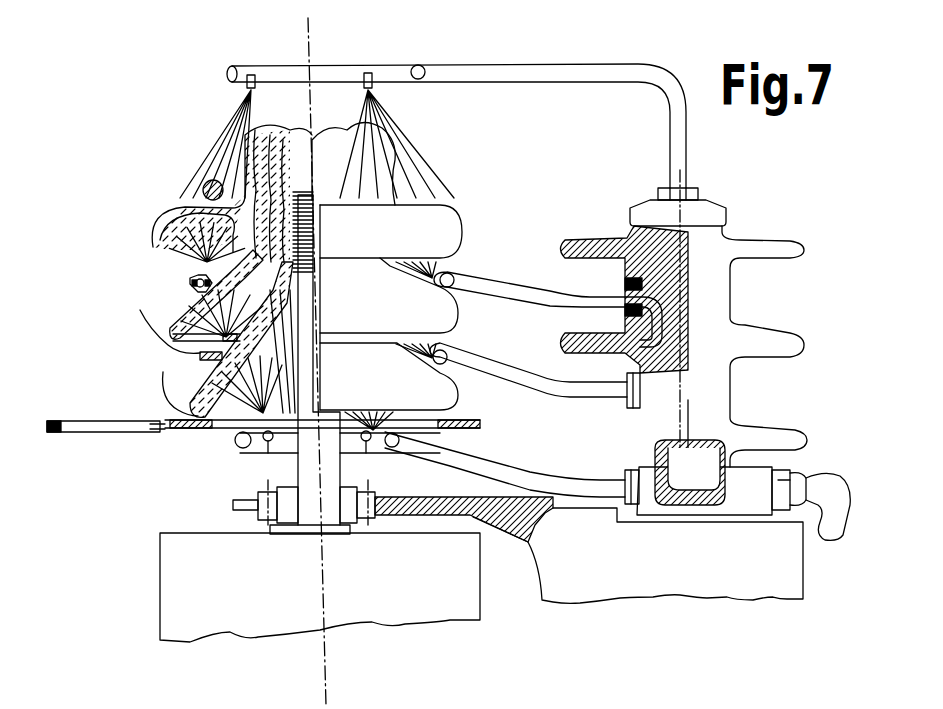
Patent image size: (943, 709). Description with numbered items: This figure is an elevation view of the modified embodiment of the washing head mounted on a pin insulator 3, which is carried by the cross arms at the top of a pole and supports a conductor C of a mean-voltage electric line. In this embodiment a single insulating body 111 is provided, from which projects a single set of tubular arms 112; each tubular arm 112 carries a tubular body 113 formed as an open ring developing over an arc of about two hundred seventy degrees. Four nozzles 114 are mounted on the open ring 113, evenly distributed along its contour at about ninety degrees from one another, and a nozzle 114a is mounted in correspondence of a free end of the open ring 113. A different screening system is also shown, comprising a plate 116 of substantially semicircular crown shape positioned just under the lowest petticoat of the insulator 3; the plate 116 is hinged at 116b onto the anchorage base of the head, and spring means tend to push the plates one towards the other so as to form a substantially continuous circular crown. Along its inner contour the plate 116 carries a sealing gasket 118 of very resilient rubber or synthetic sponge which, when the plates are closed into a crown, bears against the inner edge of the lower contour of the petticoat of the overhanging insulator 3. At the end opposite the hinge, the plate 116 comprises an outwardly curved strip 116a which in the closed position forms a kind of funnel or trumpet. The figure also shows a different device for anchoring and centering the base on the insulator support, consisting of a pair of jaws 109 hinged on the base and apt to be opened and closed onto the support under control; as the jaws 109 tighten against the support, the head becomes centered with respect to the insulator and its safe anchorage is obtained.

The pin insulator 3 is at (388, 250).
The jaws 109 is at (286, 513).
The insulating body 111 is at (718, 306).
The tubular arms 112 is at (556, 72).
The tubular body 113 is at (235, 68).
The nozzles 114 is at (373, 74).
The nozzle 114a is at (252, 72).
The plate 116 is at (196, 431).
The outwardly curved strip 116a is at (106, 440).
The hinge 116b is at (487, 447).
The sealing gasket 118 is at (197, 416).
The conductor C is at (207, 181).